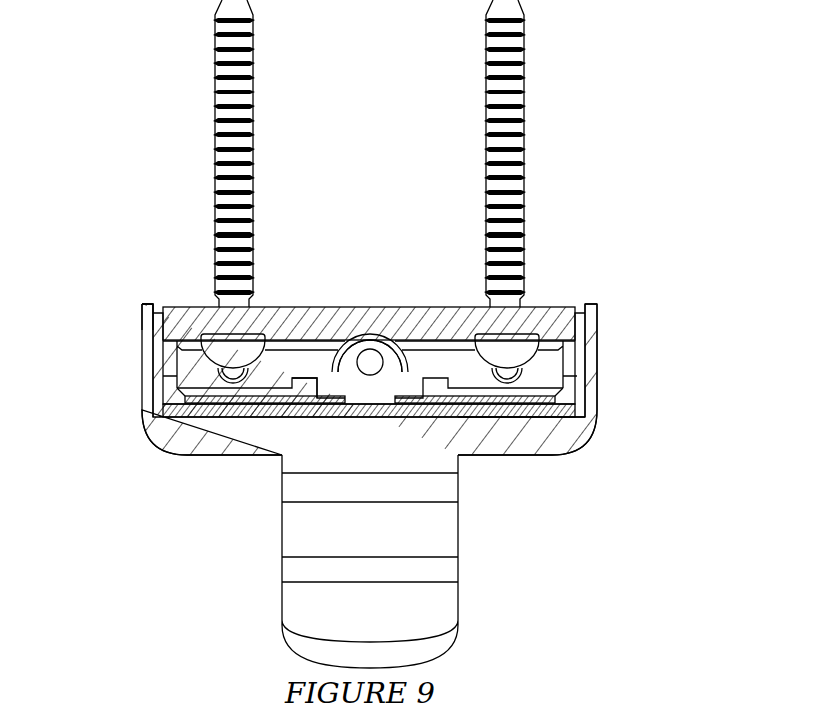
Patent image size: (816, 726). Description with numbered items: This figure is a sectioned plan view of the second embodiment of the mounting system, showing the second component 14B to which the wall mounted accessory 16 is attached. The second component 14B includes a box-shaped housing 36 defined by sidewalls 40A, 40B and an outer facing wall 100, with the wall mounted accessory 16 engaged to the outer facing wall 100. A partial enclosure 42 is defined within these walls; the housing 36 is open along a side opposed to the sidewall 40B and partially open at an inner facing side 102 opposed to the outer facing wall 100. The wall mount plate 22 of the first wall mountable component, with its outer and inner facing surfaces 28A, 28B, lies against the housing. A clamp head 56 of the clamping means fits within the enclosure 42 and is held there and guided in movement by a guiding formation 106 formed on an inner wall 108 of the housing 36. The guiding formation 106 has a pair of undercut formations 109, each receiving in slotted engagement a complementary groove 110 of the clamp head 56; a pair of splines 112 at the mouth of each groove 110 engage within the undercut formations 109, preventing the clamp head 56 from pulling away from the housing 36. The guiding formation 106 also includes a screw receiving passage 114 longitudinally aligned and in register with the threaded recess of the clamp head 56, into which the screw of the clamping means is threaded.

The inner facing side 102 is at (158, 302).
The inner facing surface 28B is at (272, 307).
The guiding formation 106 is at (360, 352).
The undercut formations 109 is at (397, 385).
The wall mount plate 22 is at (552, 328).
The partial enclosure 42 is at (164, 366).
The sidewall 40A is at (143, 405).
The clamp head 56 is at (553, 372).
The sidewall 40B is at (598, 407).
The housing 36 is at (150, 445).
The outer facing wall 100 is at (205, 455).
The outer facing surface 28A is at (280, 344).
The groove 110 is at (312, 400).
The splines 112 is at (320, 402).
The screw receiving passage 114 is at (372, 368).
The inner wall 108 is at (494, 424).
The second component 14B is at (574, 466).
The wall mounted accessory 16 is at (432, 600).